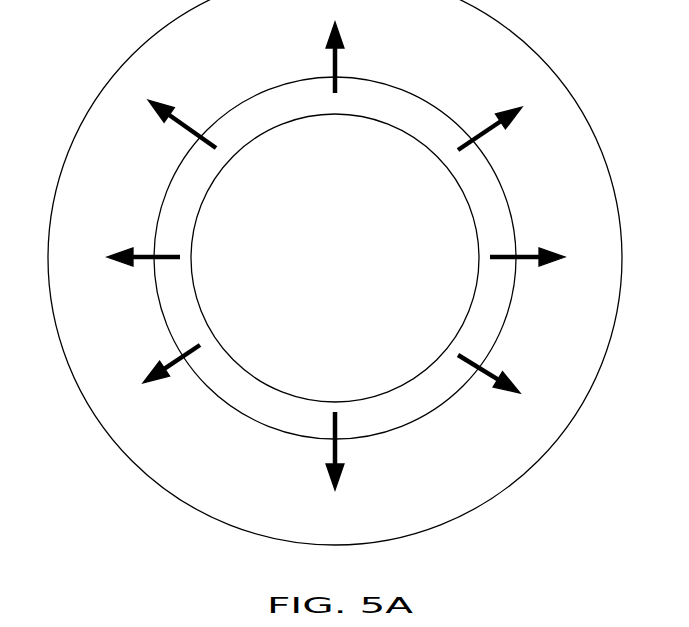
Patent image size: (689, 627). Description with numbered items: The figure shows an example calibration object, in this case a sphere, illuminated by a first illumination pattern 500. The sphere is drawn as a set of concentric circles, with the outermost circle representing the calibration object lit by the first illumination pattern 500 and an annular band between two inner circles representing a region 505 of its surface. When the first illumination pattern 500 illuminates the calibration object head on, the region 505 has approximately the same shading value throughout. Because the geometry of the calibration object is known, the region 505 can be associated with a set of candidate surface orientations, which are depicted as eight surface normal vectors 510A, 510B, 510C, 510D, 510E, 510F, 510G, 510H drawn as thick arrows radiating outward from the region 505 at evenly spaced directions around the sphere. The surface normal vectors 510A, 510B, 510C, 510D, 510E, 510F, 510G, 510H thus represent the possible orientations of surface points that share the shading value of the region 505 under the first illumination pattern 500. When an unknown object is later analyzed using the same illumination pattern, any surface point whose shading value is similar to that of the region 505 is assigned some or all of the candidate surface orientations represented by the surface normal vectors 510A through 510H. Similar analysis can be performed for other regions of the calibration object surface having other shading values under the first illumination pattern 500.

The first illumination pattern 500 is at (150, 477).
The region 505 is at (296, 415).
The surface normal vector 510A is at (338, 452).
The surface normal vector 510B is at (493, 382).
The surface normal vector 510C is at (512, 263).
The surface normal vector 510D is at (488, 133).
The surface normal vector 510E is at (338, 59).
The surface normal vector 510F is at (190, 128).
The surface normal vector 510G is at (146, 252).
The surface normal vector 510H is at (178, 360).